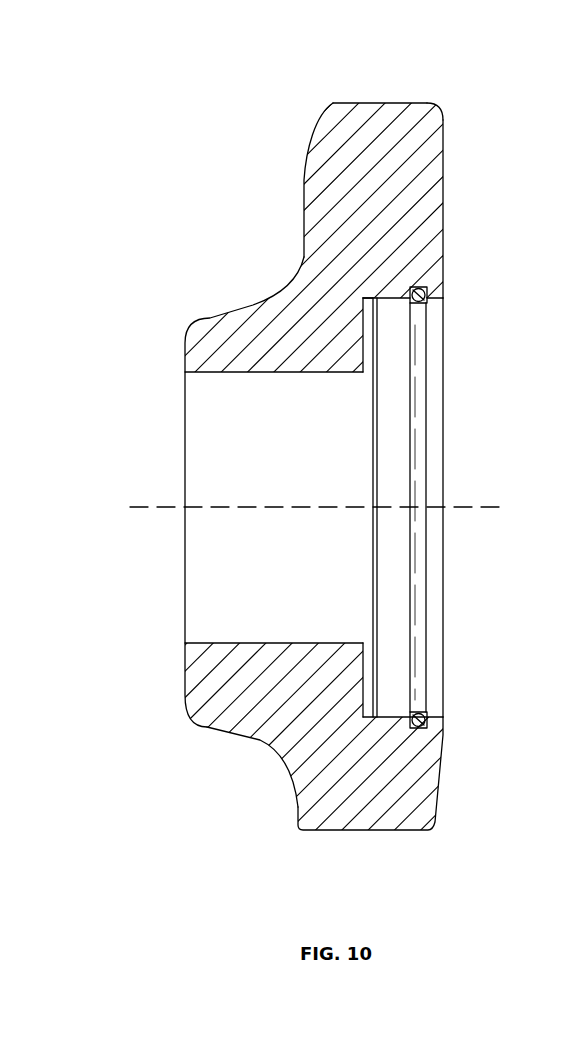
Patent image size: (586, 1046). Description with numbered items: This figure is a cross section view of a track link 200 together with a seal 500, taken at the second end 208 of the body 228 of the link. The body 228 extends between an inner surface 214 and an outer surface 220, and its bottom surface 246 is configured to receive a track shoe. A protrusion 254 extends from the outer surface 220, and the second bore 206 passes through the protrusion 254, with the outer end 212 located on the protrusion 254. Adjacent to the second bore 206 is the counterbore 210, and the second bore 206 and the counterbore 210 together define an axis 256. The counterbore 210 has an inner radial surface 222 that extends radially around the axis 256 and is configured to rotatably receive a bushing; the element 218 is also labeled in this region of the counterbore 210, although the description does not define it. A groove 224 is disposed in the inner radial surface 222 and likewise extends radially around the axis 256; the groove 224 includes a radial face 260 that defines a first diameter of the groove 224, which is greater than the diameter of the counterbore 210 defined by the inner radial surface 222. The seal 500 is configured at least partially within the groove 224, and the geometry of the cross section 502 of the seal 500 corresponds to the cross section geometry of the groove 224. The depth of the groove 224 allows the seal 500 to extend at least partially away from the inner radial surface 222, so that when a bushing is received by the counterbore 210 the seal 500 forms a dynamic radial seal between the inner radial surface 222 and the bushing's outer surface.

The track link 200 is at (186, 62).
The second bore 206 is at (204, 420).
The second end 208 is at (340, 103).
The counterbore 210 is at (440, 465).
The outer end 212 is at (185, 670).
The inner surface 214 is at (443, 178).
The ring inner wall 218 is at (375, 678).
The outer surface 220 is at (304, 185).
The inner radial surface 222 is at (400, 270).
The groove 224 is at (443, 300).
The body 228 is at (422, 142).
The bottom surface 246 is at (318, 830).
The protrusion 254 is at (207, 727).
The axis 256 is at (138, 507).
The radial face 260 is at (403, 297).
The seal 500 is at (417, 612).
The cross section of the seal 502 is at (427, 720).